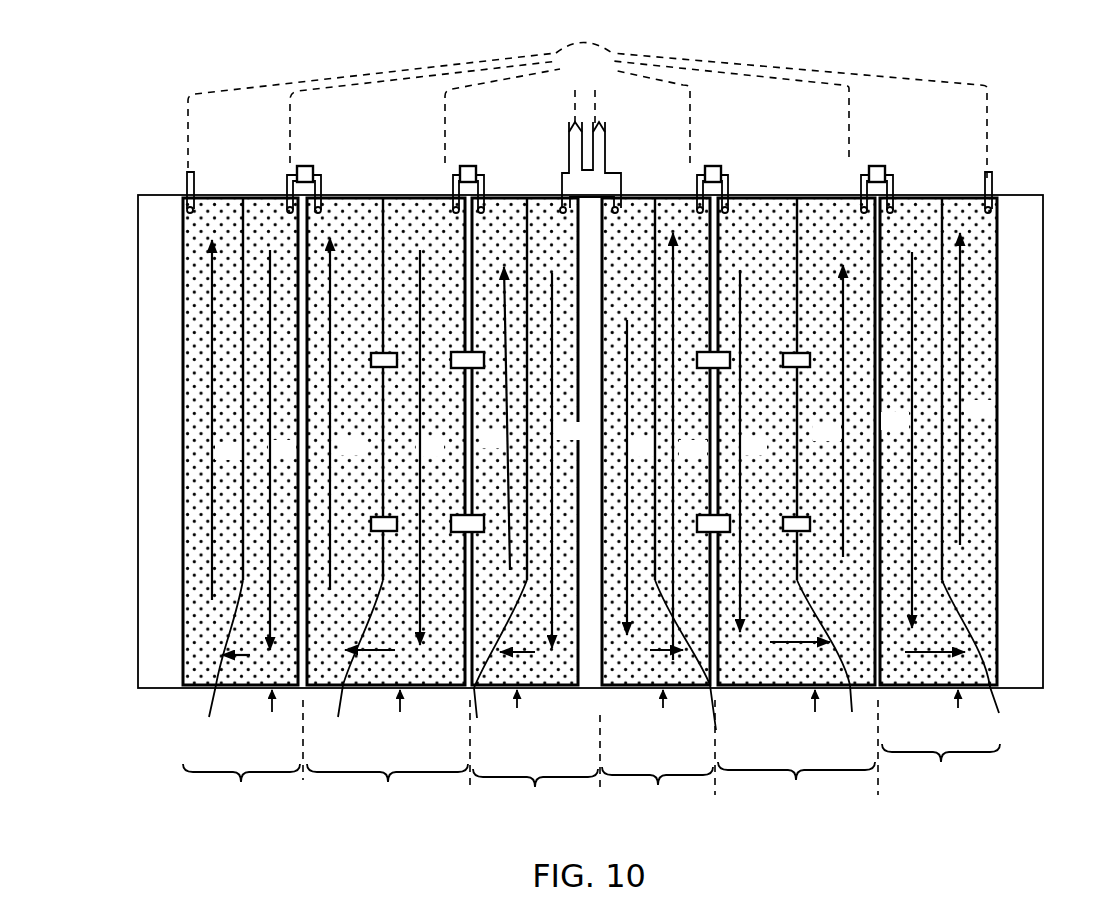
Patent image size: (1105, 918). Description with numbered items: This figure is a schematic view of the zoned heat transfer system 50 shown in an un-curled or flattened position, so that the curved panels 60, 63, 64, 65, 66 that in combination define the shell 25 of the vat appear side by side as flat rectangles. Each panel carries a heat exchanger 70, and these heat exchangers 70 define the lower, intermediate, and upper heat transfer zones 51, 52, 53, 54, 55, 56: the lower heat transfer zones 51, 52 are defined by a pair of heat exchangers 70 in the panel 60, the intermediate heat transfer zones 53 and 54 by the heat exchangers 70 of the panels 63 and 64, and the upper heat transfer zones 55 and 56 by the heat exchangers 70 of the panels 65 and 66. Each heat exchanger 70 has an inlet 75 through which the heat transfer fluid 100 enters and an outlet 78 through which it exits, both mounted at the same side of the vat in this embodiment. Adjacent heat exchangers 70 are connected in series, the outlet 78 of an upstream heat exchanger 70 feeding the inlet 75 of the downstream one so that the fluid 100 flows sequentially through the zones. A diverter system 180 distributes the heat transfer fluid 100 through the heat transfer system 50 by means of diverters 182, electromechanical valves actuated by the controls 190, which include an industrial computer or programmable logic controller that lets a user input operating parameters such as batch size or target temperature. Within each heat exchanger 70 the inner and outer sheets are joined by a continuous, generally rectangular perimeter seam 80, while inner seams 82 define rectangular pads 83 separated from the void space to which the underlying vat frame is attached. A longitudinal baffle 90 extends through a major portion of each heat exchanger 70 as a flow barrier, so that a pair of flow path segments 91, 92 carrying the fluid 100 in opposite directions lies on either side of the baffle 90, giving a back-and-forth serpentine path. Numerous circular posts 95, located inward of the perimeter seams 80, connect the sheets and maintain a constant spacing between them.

The shell 25 is at (1049, 250).
The zoned heat transfer system 50 is at (166, 703).
The lower heat transfer zone 51 is at (535, 795).
The lower heat transfer zone 52 is at (657, 794).
The intermediate heat transfer zone 53 is at (387, 791).
The intermediate heat transfer zone 54 is at (796, 792).
The upper heat transfer zone 55 is at (241, 791).
The upper heat transfer zone 56 is at (941, 772).
The panel 60 is at (598, 688).
The panel 63 is at (442, 688).
The panel 64 is at (770, 688).
The panel 65 is at (246, 688).
The panel 66 is at (925, 688).
The heat exchanger 70 is at (615, 712).
The inlet 75 is at (288, 208).
The outlet 78 is at (186, 207).
The perimeter seam 80 is at (184, 566).
The inner seam 82 is at (373, 368).
The rectangular pad 83 is at (375, 352).
The baffle 90 is at (605, 666).
The flow path segment 91 is at (272, 462).
The flow path segment 92 is at (214, 465).
The post 95 is at (187, 368).
The heat transfer fluid 100 is at (522, 194).
The diverter system 180 is at (608, 168).
The diverter 182 is at (307, 166).
The controls 190 is at (566, 74).